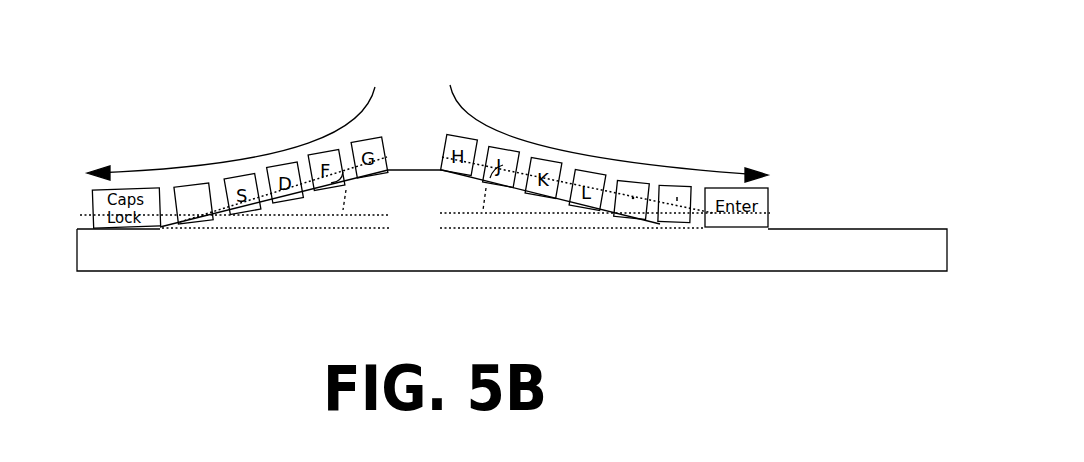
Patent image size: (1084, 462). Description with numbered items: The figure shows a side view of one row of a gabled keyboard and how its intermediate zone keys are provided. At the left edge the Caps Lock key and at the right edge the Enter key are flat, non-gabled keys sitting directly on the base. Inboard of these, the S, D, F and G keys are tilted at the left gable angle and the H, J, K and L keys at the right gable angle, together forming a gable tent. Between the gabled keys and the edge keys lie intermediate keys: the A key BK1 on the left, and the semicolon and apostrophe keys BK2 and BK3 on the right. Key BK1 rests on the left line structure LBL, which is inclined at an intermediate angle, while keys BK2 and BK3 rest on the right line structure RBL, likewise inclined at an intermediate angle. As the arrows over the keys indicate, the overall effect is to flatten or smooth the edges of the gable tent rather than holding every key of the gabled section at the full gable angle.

The intermediate key A BK1 is at (197, 183).
The intermediate key ; BK2 is at (632, 195).
The intermediate key ' BK3 is at (677, 195).
The left base line structure LBL is at (219, 216).
The right base line structure RBL is at (613, 216).